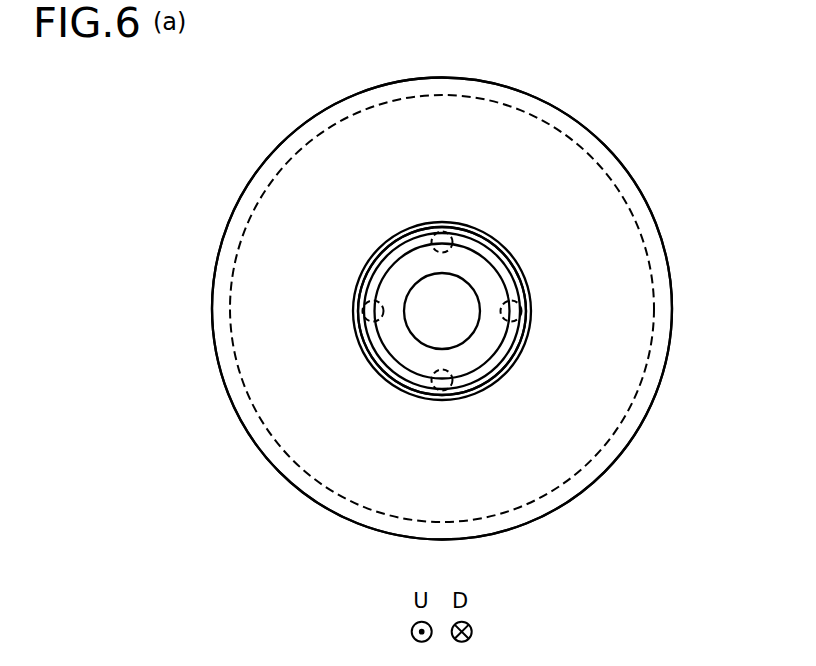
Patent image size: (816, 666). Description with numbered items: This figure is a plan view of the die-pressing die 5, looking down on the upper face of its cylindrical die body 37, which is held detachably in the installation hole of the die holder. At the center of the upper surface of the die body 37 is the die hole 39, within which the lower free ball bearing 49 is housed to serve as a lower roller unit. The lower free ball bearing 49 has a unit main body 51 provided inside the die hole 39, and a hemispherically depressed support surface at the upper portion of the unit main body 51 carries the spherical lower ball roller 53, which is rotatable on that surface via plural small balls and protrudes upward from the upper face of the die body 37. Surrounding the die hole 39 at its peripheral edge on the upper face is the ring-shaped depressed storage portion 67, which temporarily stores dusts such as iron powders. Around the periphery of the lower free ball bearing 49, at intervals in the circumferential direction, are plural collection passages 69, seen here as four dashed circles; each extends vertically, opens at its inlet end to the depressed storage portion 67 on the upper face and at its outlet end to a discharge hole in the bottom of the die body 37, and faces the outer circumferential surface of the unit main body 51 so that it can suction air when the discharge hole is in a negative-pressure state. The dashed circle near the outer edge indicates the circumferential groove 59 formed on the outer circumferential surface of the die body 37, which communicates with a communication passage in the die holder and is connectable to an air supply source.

The die-pressing die 5 is at (607, 114).
The die body 37 is at (641, 310).
The die hole 39 is at (483, 368).
The lower free ball bearing 49 is at (406, 250).
The unit main body 51 is at (472, 260).
The lower ball roller 53 is at (460, 292).
The circumferential groove 59 is at (230, 330).
The ring-shaped depressed storage portion 67 is at (387, 362).
The collection passages 69 is at (443, 232).